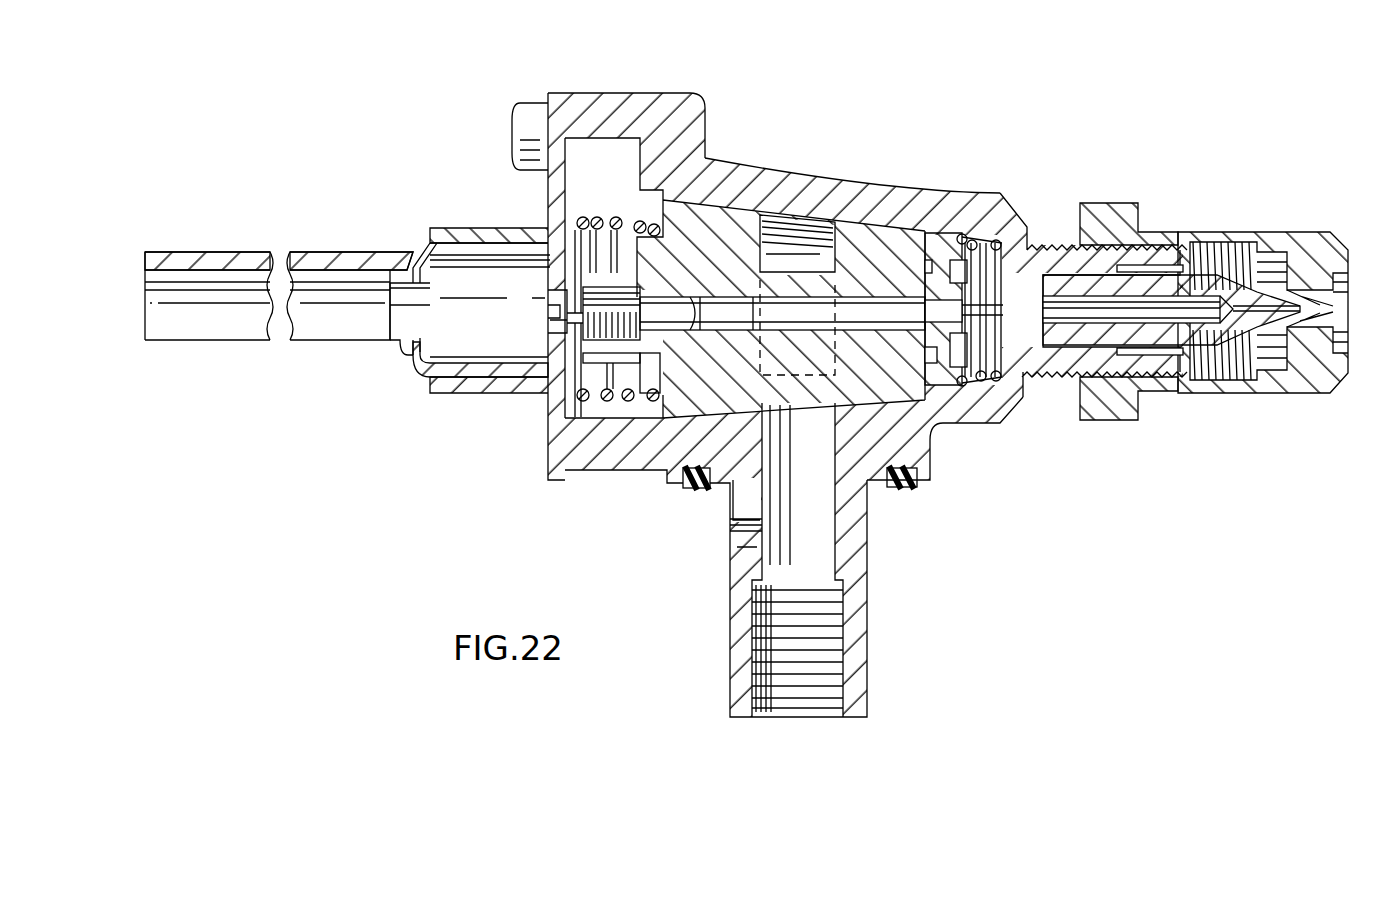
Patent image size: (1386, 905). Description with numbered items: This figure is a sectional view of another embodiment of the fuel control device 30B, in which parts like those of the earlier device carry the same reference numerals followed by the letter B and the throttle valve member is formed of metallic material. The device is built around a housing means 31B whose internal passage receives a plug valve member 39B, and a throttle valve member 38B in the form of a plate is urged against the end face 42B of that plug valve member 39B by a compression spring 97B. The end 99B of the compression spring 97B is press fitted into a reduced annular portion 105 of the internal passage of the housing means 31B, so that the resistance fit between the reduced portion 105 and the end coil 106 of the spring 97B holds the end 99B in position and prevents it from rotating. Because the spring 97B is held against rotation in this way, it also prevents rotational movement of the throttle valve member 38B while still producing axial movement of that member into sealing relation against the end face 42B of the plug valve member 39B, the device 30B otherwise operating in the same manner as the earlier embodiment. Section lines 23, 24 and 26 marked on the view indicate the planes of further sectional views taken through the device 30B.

The housing means 31B is at (641, 97).
The plug valve member 39B is at (873, 233).
The throttle valve member 38B is at (944, 243).
The fuel control device 30B is at (1015, 183).
The reduced annular portion 105 is at (1028, 226).
The end of the spring 99B is at (1093, 295).
The end face 42B is at (922, 355).
The end coil 106 is at (1023, 375).
The compression spring 97B is at (1018, 368).
The section line 23- 23 is at (797, 118).
The section line 24- 24 is at (537, 310).
The section line 26- 26 is at (923, 177).